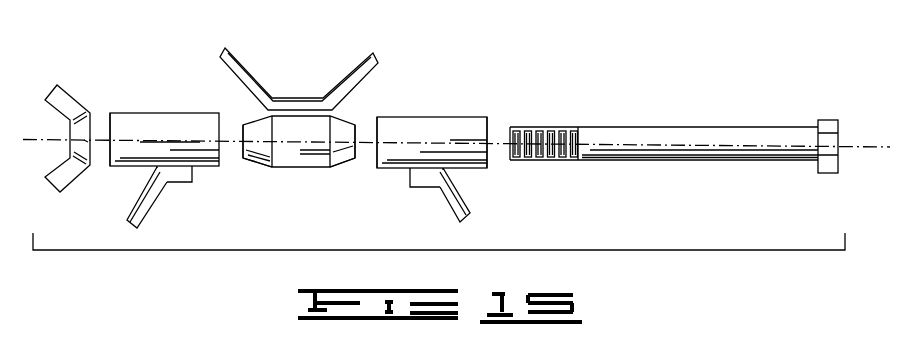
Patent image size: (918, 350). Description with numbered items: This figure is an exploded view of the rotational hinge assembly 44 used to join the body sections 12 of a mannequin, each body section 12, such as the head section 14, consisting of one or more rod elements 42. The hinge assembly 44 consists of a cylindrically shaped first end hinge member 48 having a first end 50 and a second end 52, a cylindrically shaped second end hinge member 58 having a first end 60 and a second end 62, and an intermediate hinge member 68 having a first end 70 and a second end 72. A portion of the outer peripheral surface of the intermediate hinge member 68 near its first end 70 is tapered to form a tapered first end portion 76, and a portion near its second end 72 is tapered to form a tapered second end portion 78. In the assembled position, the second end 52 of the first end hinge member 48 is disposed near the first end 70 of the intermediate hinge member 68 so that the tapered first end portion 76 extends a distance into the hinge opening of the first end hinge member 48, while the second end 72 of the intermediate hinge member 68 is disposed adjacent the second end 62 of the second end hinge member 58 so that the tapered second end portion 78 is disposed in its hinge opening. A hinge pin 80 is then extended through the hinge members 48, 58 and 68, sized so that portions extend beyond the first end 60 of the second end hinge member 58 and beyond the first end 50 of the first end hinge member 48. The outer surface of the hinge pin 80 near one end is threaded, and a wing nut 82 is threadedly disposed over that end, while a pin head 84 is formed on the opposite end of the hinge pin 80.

The body section 12 is at (350, 63).
The head section 14 is at (439, 202).
The rod element 42 is at (142, 203).
The hinge assembly 44 is at (416, 114).
The first end hinge member 48 is at (145, 122).
The first end 50 is at (110, 120).
The second end 52 is at (221, 162).
The second end hinge member 58 is at (453, 123).
The first end 60 is at (488, 168).
The second end 62 is at (377, 167).
The intermediate hinge member 68 is at (310, 158).
The first end 70 is at (243, 124).
The second end 72 is at (357, 127).
The tapered first end portion 76 is at (265, 157).
The tapered second end portion 78 is at (343, 158).
The hinge pin 80 is at (662, 137).
The wing nut 82 is at (63, 98).
The pin head 84 is at (828, 126).